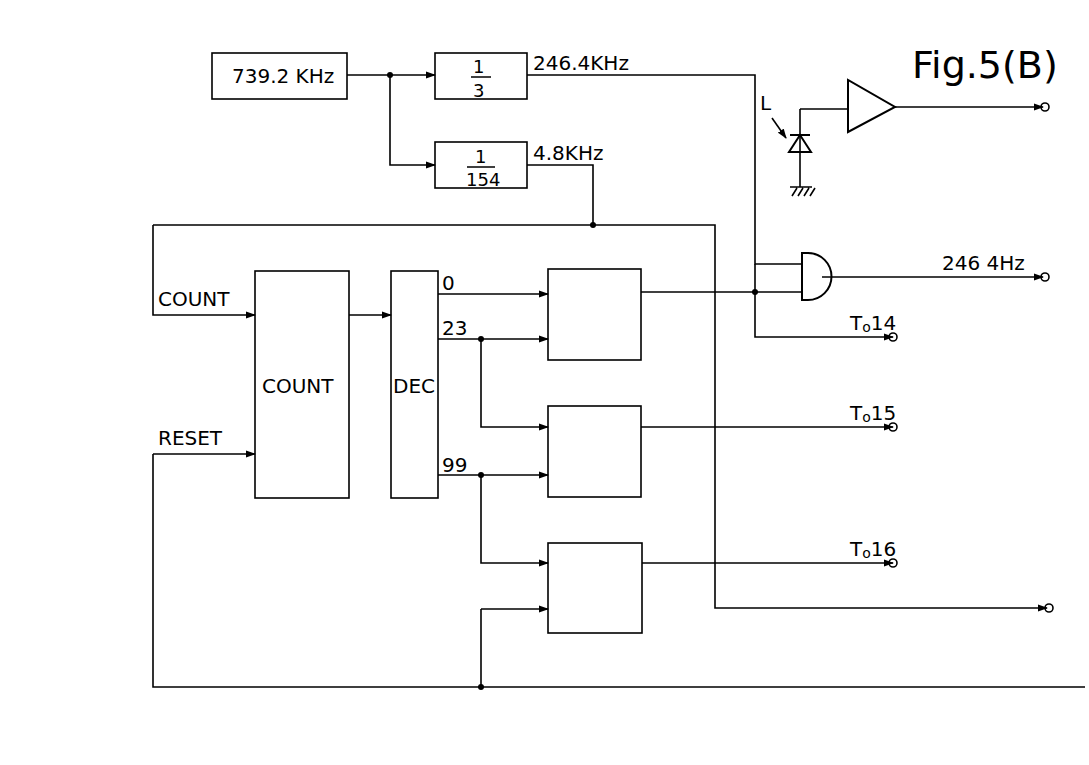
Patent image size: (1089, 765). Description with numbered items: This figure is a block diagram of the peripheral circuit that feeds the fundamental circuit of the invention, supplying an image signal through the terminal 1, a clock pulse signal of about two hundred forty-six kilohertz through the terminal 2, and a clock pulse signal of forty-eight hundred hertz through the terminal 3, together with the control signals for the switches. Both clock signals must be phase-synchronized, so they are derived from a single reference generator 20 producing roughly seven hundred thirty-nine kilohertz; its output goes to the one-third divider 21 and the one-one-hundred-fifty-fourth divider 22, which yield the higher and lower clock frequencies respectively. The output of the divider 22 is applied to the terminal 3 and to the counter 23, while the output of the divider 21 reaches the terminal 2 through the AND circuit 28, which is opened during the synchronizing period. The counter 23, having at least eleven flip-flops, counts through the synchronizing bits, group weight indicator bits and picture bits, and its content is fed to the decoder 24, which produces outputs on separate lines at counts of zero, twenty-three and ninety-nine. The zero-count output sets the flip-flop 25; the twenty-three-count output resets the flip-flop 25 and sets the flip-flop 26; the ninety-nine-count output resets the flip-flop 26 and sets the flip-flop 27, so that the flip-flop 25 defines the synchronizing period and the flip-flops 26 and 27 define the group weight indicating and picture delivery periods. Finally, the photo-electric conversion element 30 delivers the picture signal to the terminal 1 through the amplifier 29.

The terminal 1 is at (1047, 111).
The terminal 2 is at (1047, 272).
The terminal 3 is at (1051, 603).
The reference generator 20 is at (276, 100).
The 1/3 divider 21 is at (527, 94).
The 1/154 divider 22 is at (527, 182).
The counter 23 is at (300, 270).
The decoder 24 is at (410, 270).
The flip-flop 25 is at (641, 349).
The flip-flop 26 is at (641, 486).
The flip-flop 27 is at (642, 618).
The AND circuit 28 is at (830, 246).
The amplifier 29 is at (860, 126).
The photo-electric conversion element 30 is at (810, 150).